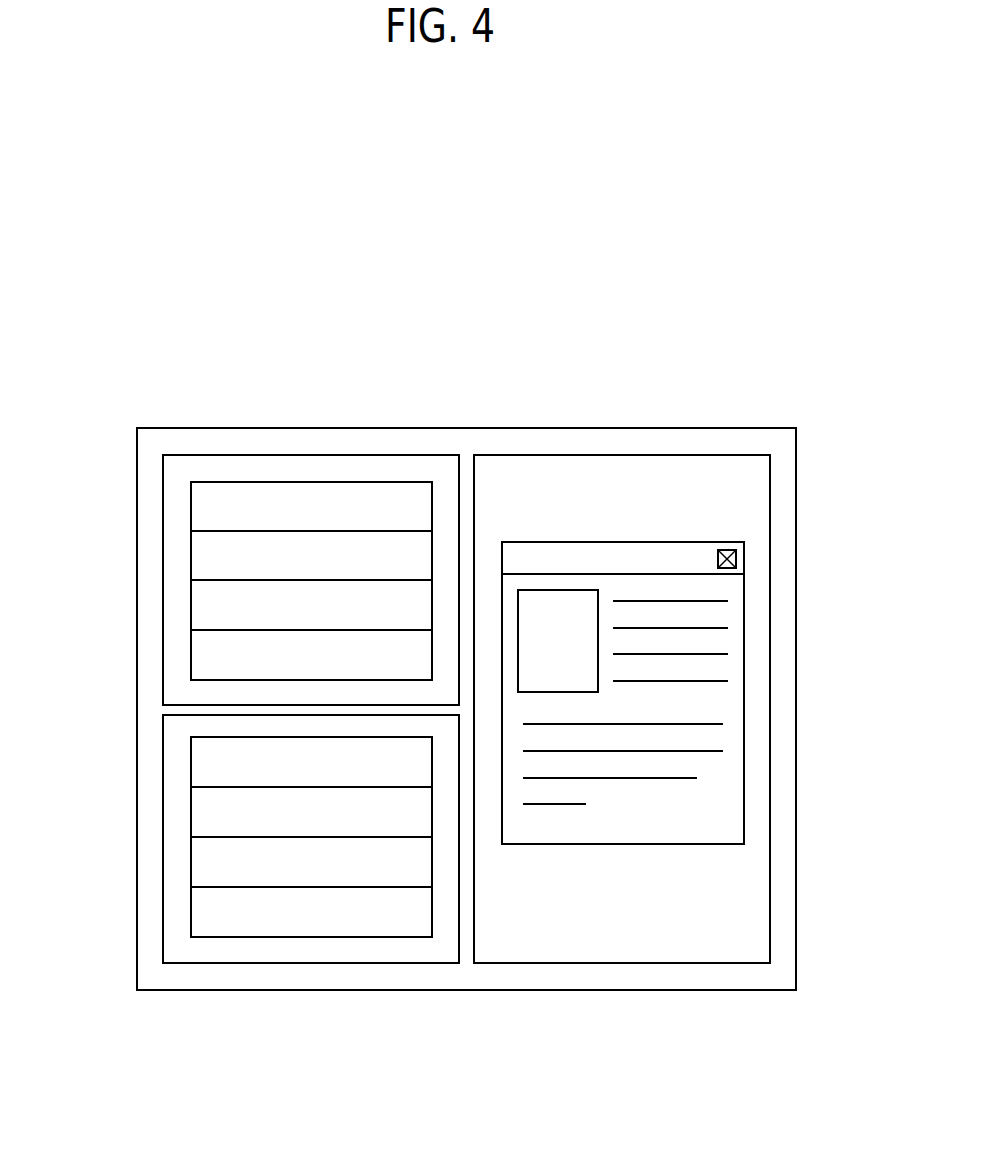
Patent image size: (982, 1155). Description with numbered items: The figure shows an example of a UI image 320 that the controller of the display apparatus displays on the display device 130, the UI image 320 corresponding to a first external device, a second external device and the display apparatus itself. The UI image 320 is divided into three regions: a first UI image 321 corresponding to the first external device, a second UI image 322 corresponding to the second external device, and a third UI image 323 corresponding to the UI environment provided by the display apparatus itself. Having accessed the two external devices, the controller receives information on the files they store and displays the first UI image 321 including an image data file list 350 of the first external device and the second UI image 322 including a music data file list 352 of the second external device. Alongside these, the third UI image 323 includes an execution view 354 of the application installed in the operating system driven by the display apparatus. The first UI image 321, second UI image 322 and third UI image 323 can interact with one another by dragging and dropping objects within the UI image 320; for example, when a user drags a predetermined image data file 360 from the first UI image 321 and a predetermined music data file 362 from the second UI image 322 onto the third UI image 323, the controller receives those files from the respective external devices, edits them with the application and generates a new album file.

The display device 130 is at (465, 427).
The UI image 320 is at (736, 381).
The first UI image 321 is at (175, 617).
The second UI image 322 is at (175, 872).
The third UI image 323 is at (623, 948).
The image data file list 350 is at (207, 507).
The music data file list 352 is at (207, 765).
The execution view 354 is at (683, 553).
The image data file 360 is at (207, 557).
The music data file 362 is at (207, 815).